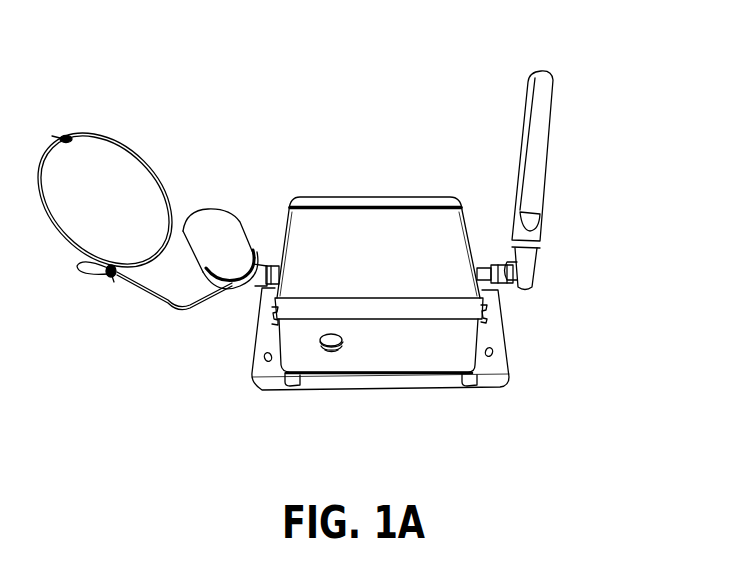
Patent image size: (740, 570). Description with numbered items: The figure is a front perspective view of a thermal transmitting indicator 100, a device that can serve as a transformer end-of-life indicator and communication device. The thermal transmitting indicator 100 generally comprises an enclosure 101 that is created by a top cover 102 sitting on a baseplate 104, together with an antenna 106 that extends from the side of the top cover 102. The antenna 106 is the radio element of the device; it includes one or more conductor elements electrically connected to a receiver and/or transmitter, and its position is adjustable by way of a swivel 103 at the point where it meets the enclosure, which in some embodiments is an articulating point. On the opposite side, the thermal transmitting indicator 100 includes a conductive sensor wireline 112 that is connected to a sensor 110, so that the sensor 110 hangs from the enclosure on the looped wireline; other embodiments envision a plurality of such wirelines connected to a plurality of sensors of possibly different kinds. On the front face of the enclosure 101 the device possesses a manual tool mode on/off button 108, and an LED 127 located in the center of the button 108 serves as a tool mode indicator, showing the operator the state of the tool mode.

The thermal transmitting indicator 100 is at (420, 38).
The enclosure 101 is at (462, 345).
The top cover 102 is at (332, 253).
The swivel 103 is at (487, 300).
The baseplate 104 is at (488, 377).
The antenna 106 is at (550, 132).
The manual tool mode on/off button 108 is at (344, 343).
The sensor 110 is at (207, 210).
The conductive sensor wireline 112 is at (170, 194).
The LED 127 is at (328, 352).